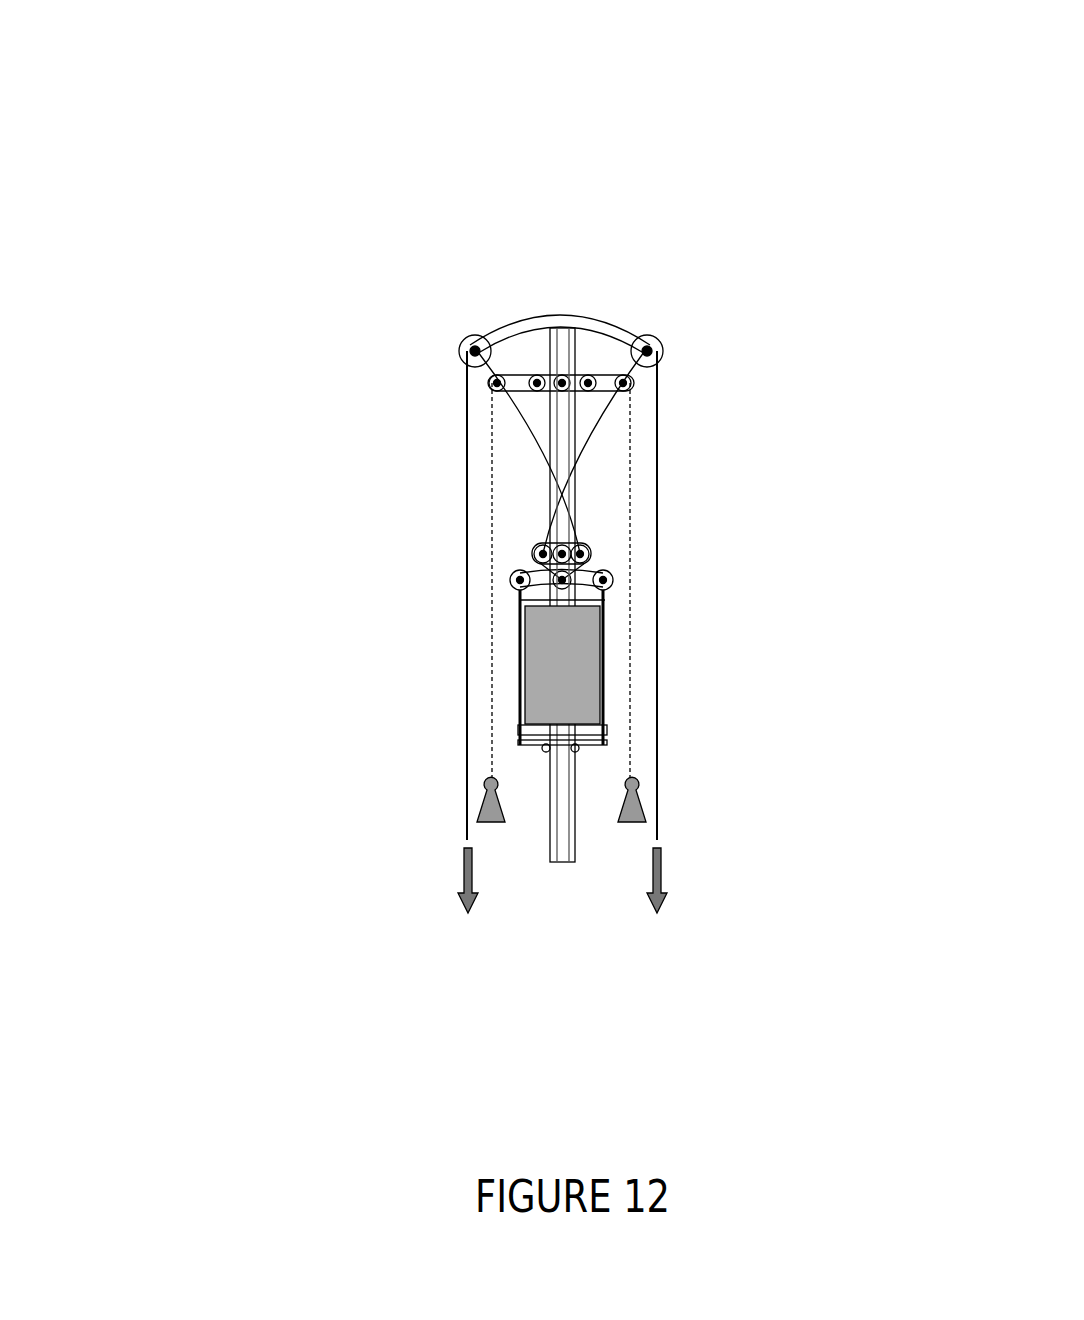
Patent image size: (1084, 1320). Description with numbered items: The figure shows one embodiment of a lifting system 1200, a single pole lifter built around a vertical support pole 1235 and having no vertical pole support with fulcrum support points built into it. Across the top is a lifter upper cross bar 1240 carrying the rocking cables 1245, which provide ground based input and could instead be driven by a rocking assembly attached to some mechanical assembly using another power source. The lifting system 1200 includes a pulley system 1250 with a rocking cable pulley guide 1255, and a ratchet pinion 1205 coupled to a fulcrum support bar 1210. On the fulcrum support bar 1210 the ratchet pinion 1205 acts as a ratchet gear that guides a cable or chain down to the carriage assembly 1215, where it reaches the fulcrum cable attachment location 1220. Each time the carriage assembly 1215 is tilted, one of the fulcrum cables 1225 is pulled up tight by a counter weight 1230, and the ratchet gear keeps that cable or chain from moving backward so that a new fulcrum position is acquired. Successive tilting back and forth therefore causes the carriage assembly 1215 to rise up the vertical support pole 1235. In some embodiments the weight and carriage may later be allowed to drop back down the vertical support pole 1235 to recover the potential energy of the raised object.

The lifting system 1200 is at (264, 152).
The ratchet pinion 1205 is at (540, 358).
The fulcrum support bar 1210 is at (640, 390).
The carriage assembly 1215 is at (616, 640).
The fulcrum cable attachment location 1220 is at (531, 744).
The fulcrum cables 1225 is at (638, 540).
The counter weight 1230 is at (625, 835).
The vertical support pole 1235 is at (540, 780).
The lifter upper cross bar 1240 is at (518, 320).
The rocking cables 1245 is at (455, 470).
The pulley system 1250 is at (522, 562).
The rocking cable pulley guide 1255 is at (672, 355).